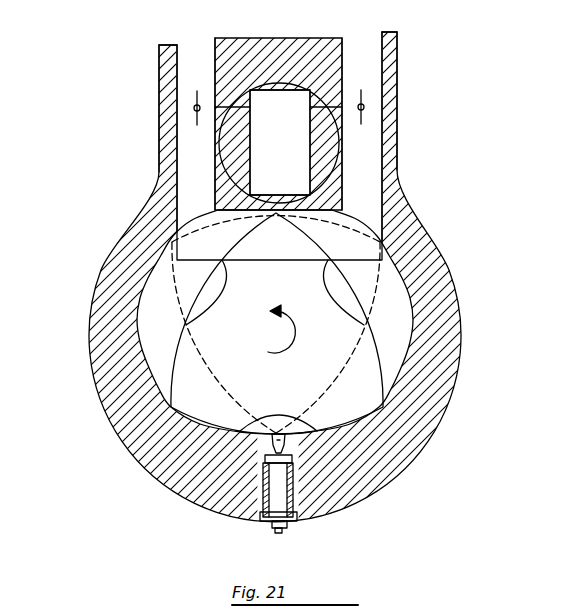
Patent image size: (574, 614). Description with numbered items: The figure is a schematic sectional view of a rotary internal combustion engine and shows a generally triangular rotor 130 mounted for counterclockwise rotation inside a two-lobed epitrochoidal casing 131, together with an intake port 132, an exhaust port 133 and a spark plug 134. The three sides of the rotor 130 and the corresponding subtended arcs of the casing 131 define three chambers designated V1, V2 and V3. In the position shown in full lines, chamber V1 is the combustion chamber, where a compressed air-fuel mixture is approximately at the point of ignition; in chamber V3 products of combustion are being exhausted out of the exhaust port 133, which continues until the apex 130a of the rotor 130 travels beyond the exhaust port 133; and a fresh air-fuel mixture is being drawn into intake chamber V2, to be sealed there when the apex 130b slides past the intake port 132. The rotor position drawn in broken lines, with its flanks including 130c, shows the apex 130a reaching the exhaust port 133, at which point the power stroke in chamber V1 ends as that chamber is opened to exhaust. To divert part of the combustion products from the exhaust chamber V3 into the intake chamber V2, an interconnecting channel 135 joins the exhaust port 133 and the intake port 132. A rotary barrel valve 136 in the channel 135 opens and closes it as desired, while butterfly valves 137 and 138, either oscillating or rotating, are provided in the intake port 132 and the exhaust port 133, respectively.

The rotor 130 is at (207, 343).
The apex 130a is at (380, 243).
The apex 130b is at (172, 243).
The rotor flank 130c is at (264, 430).
The casing 131 is at (118, 392).
The intake port 132 is at (190, 207).
The exhaust port 133 is at (375, 222).
The spark plug 134 is at (293, 520).
The interconnecting channel 135 is at (338, 163).
The rotary barrel valve 136 is at (272, 103).
The butterfly valve 137 is at (197, 118).
The butterfly valve 138 is at (362, 118).
The combustion chamber V1 is at (332, 430).
The intake chamber V2 is at (183, 288).
The exhaust chamber V3 is at (360, 285).